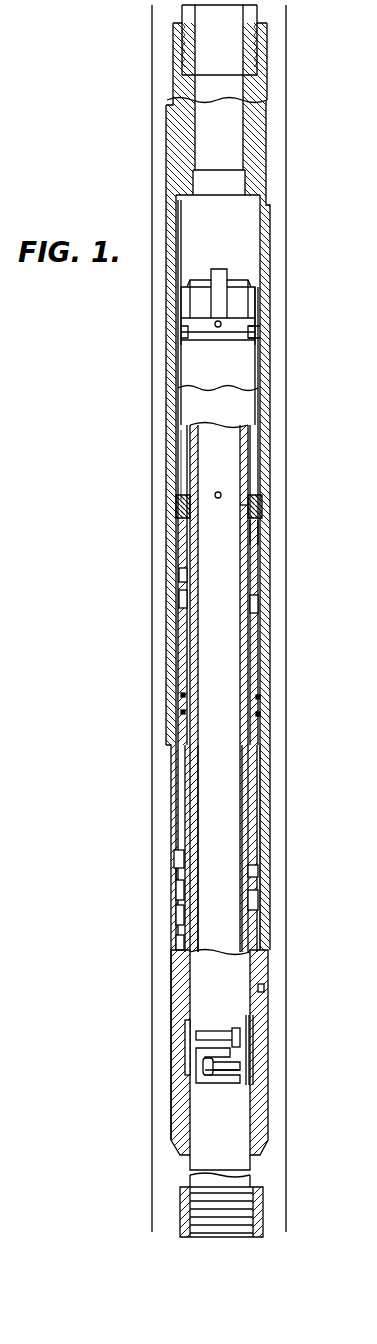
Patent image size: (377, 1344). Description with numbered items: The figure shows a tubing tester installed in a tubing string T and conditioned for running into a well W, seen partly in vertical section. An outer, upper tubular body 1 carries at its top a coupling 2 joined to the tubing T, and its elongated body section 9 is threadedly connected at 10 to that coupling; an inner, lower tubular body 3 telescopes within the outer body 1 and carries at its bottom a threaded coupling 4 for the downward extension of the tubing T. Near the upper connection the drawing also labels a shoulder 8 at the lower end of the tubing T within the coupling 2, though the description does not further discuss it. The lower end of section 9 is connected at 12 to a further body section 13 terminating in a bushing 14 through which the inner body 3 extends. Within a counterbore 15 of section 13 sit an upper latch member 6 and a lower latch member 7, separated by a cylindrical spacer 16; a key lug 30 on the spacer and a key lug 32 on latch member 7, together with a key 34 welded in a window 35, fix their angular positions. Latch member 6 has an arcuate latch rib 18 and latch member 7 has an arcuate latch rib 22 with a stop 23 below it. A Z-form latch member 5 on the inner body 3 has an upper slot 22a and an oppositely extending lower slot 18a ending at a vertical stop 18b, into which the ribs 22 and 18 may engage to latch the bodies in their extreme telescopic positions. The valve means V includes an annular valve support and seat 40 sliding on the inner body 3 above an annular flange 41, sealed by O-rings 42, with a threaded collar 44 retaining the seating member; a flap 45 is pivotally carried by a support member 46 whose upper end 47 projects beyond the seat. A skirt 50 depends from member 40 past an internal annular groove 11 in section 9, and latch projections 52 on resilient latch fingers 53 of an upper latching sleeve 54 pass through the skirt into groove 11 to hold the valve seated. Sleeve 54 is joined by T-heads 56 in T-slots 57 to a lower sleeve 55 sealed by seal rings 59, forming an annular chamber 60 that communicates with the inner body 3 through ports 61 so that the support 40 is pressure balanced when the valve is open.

The tubing string T is at (255, 14).
The coupling 2 is at (256, 106).
The threaded connection 10 is at (172, 163).
The shoulder 8 is at (246, 176).
The outer upper tubular body 1 is at (272, 222).
The elongated body section 9 is at (262, 366).
The valve means V is at (262, 300).
The support member 46 is at (214, 300).
The upper end of support member 47 is at (223, 269).
The valve flap 45 is at (200, 278).
The threaded collar 44 is at (186, 312).
The O-rings 42 is at (182, 340).
The valve support and seat 40 is at (258, 330).
The ports 61 is at (219, 492).
The skirt 50 is at (182, 447).
The lower sleeve 55 is at (261, 628).
The annular chamber 60 is at (186, 468).
The internal annular groove 11 is at (173, 510).
The latch projections 52 is at (264, 506).
The annular flange 41 is at (250, 512).
The resilient latch fingers 53 is at (258, 546).
The upper valve latching sleeve 54 is at (180, 580).
The T-slots 57 is at (180, 598).
The T-heads 56 is at (256, 614).
The well W is at (277, 645).
The seal rings 59 is at (260, 714).
The threaded connection 12 is at (268, 758).
The lower body section 13 is at (262, 818).
The cylindrical spacer 16 is at (262, 960).
The key 34 is at (174, 858).
The window 35 is at (178, 864).
The arcuate latch rib 22 is at (177, 910).
The key lug 32 is at (180, 941).
The lower latch member 7 is at (265, 877).
The stop 23 is at (262, 905).
The bushing 14 is at (263, 1118).
The counterbore 15 is at (260, 988).
The key lug 30 is at (185, 1032).
The arcuate latch rib 18 is at (246, 1060).
The latch member 5 is at (215, 1030).
The upper slot 22a is at (205, 1052).
The vertical stop 18b is at (204, 1068).
The lower slot 18a is at (226, 1072).
The upper latch member 6 is at (266, 1084).
The inner lower tubular body 3 is at (252, 1161).
The threaded coupling 4 is at (258, 1200).